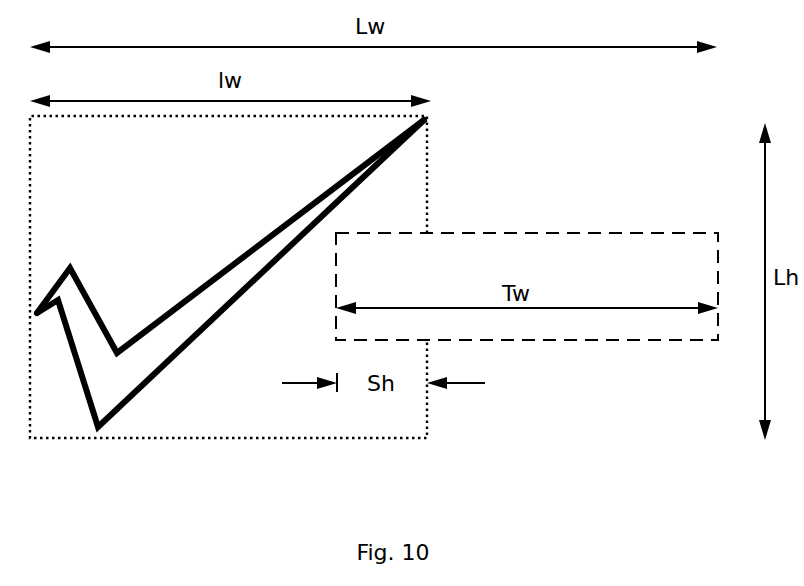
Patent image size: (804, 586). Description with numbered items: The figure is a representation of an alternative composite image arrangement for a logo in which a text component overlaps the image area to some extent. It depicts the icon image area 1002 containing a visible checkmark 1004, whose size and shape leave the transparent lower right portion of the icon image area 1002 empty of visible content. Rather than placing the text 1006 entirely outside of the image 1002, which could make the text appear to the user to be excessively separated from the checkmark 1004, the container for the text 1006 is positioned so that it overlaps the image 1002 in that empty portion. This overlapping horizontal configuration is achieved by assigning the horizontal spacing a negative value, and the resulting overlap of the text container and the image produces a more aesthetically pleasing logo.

The icon image area 1002 is at (226, 397).
The visible checkmark 1004 is at (233, 258).
The text 1006 is at (546, 228).